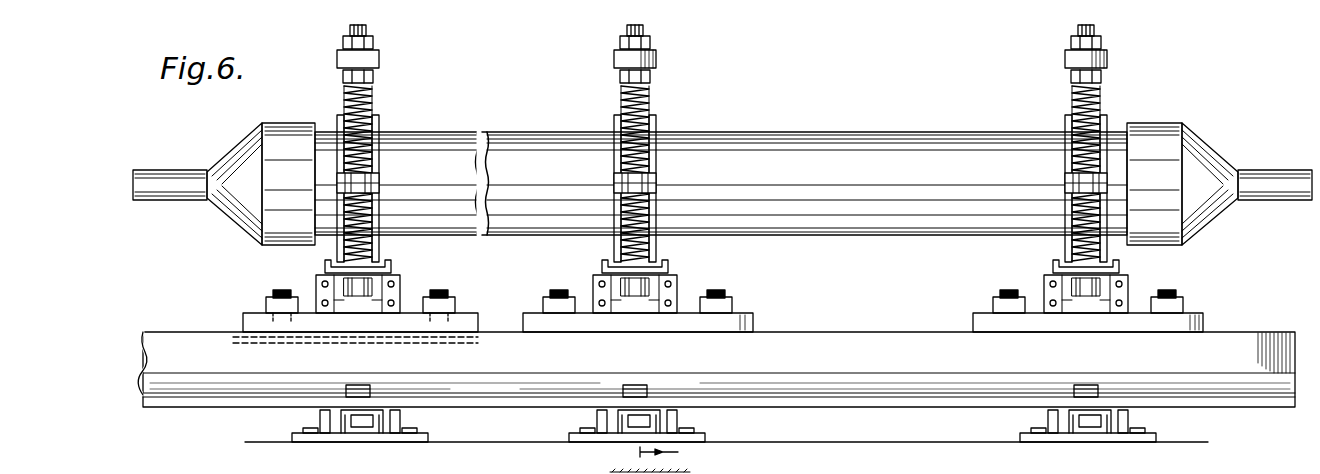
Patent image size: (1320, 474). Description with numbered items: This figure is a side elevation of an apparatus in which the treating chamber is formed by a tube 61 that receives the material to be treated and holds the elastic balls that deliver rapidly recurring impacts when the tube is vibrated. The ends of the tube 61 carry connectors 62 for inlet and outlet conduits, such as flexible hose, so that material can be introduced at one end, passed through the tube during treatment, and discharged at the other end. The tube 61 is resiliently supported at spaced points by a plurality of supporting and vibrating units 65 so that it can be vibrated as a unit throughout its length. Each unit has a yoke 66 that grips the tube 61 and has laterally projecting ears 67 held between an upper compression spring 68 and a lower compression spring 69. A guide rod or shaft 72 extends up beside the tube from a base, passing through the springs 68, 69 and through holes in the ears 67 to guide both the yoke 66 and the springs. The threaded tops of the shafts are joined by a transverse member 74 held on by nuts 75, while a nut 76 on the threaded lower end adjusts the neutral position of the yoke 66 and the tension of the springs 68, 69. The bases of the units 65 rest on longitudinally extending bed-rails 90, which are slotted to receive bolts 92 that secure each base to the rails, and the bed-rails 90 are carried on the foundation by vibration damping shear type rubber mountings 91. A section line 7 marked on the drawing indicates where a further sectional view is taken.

The section line 7- 7 is at (657, 60).
The tube 61 is at (745, 132).
The connectors 62 is at (248, 205).
The supporting and vibrating units 65 is at (657, 84).
The yoke 66 is at (380, 90).
The ears 67 is at (380, 178).
The compression spring 68 is at (379, 108).
The compression spring 69 is at (380, 254).
The guide rod or shaft 72 is at (348, 31).
The transverse member 74 is at (613, 60).
The nuts 75 is at (376, 42).
The nut 76 is at (1128, 281).
The bed-rails 90 is at (1233, 343).
The shear type rubber mountings 91 is at (392, 435).
The bolts 92 is at (563, 278).